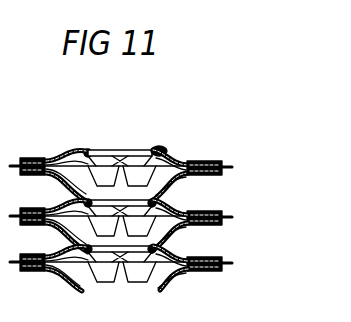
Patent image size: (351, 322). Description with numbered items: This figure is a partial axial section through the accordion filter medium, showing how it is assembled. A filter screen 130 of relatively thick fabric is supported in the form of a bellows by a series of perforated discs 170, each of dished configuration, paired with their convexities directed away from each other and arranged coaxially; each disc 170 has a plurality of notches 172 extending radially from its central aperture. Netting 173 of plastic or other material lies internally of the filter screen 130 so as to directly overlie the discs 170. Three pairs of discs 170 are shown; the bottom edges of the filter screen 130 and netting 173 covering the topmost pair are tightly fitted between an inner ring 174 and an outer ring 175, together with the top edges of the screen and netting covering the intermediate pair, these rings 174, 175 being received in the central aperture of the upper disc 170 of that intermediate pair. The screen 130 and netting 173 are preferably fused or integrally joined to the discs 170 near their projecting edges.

The filter screen 130 is at (220, 170).
The perforated disc 170 is at (172, 158).
The notch 172 is at (157, 227).
The netting 173 is at (213, 162).
The inner ring 174 is at (149, 150).
The outer ring 175 is at (166, 148).